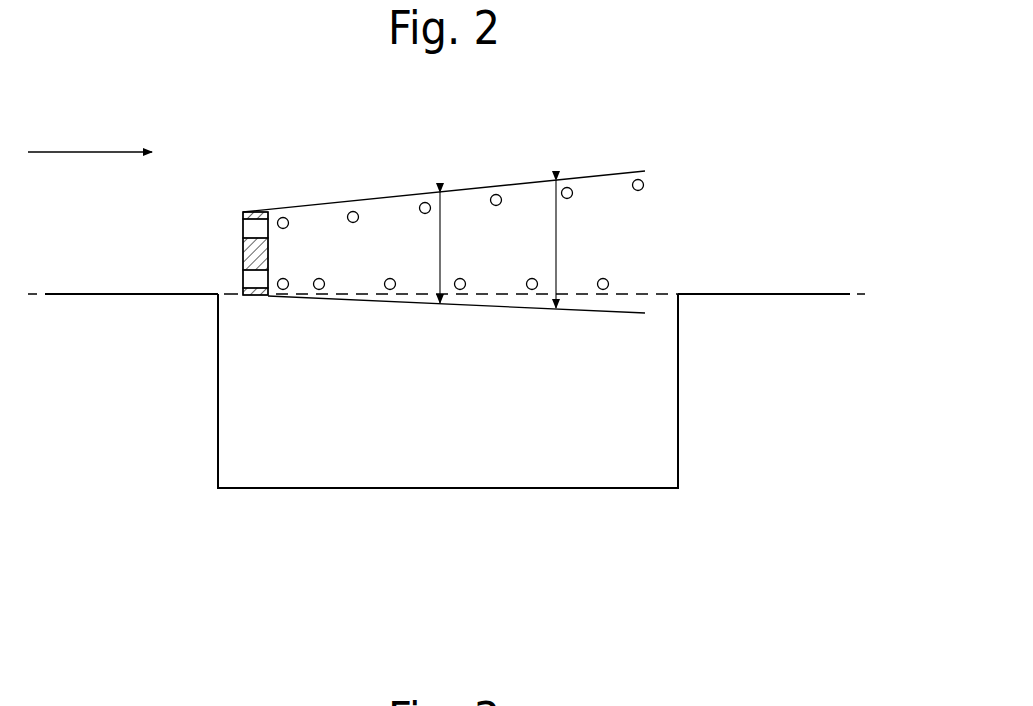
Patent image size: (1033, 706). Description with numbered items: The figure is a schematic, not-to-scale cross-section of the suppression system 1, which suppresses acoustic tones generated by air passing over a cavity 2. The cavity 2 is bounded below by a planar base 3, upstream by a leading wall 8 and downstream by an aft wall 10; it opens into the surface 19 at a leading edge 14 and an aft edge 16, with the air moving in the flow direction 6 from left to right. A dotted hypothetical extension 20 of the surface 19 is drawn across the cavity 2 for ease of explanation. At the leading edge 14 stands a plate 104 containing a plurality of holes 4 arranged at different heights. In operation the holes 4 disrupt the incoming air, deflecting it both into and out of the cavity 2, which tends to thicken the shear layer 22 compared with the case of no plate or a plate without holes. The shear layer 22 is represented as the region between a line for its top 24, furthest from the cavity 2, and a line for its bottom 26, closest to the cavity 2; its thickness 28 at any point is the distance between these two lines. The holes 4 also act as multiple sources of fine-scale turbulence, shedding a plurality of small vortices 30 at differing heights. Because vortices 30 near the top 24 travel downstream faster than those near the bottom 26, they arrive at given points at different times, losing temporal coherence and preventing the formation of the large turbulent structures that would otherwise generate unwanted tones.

The suppression system 1 is at (729, 122).
The cavity 2 is at (322, 453).
The planar base 3 is at (460, 490).
The holes 4 is at (250, 230).
The flow direction 6 is at (68, 152).
The leading wall 8 is at (216, 413).
The aft wall 10 is at (680, 400).
The leading edge 14 is at (218, 294).
The aft edge 16 is at (678, 294).
The surface 19 is at (812, 294).
The hypothetical extension 20 is at (640, 294).
The shear layer 22 is at (368, 215).
The top of the shear layer 24 is at (517, 183).
The bottom of the shear layer 26 is at (500, 308).
The thickness of the shear layer 28 is at (442, 250).
The vortices 30 is at (283, 217).
The plate 104 is at (255, 212).